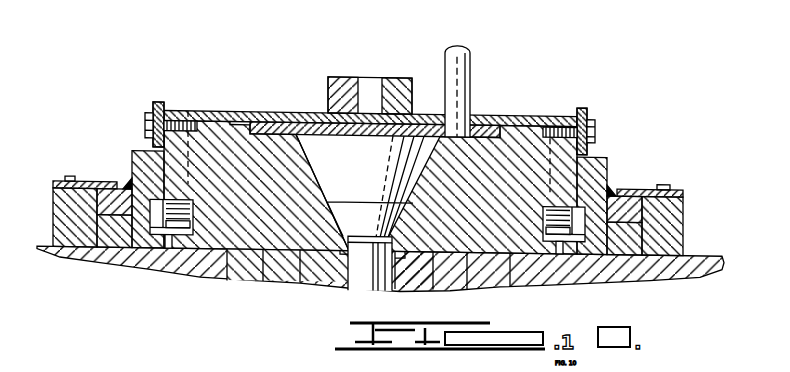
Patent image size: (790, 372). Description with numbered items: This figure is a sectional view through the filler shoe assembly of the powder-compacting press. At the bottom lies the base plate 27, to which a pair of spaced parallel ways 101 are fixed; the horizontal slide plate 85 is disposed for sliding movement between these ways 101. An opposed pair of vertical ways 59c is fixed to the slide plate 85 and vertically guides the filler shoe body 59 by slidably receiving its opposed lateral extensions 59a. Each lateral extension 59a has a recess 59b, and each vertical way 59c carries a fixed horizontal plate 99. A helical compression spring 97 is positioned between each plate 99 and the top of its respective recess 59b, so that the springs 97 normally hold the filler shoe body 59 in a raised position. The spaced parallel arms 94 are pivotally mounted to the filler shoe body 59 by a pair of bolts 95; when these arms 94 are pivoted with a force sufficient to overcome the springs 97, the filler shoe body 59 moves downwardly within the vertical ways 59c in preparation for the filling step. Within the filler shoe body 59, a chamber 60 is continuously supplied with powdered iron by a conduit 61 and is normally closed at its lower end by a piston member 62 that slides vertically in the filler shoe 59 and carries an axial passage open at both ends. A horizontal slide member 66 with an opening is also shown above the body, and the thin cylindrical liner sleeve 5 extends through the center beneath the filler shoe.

The liner sleeve 5 is at (378, 292).
The base plate 27 is at (722, 262).
The filler shoe body 59 is at (530, 130).
The lateral extensions 59a is at (182, 112).
The recess 59b is at (482, 264).
The vertical ways 59c is at (132, 163).
The chamber 60 is at (457, 148).
The conduit 61 is at (472, 60).
The piston member 62 is at (349, 252).
The horizontal slide member 66 is at (407, 63).
The slide plate 85 is at (613, 196).
The spaced parallel arms 94 is at (163, 105).
The bolts 95 is at (145, 126).
The helical compression springs 97 is at (192, 218).
The horizontal plate 99 is at (167, 233).
The spaced parallel ways 101 is at (53, 200).